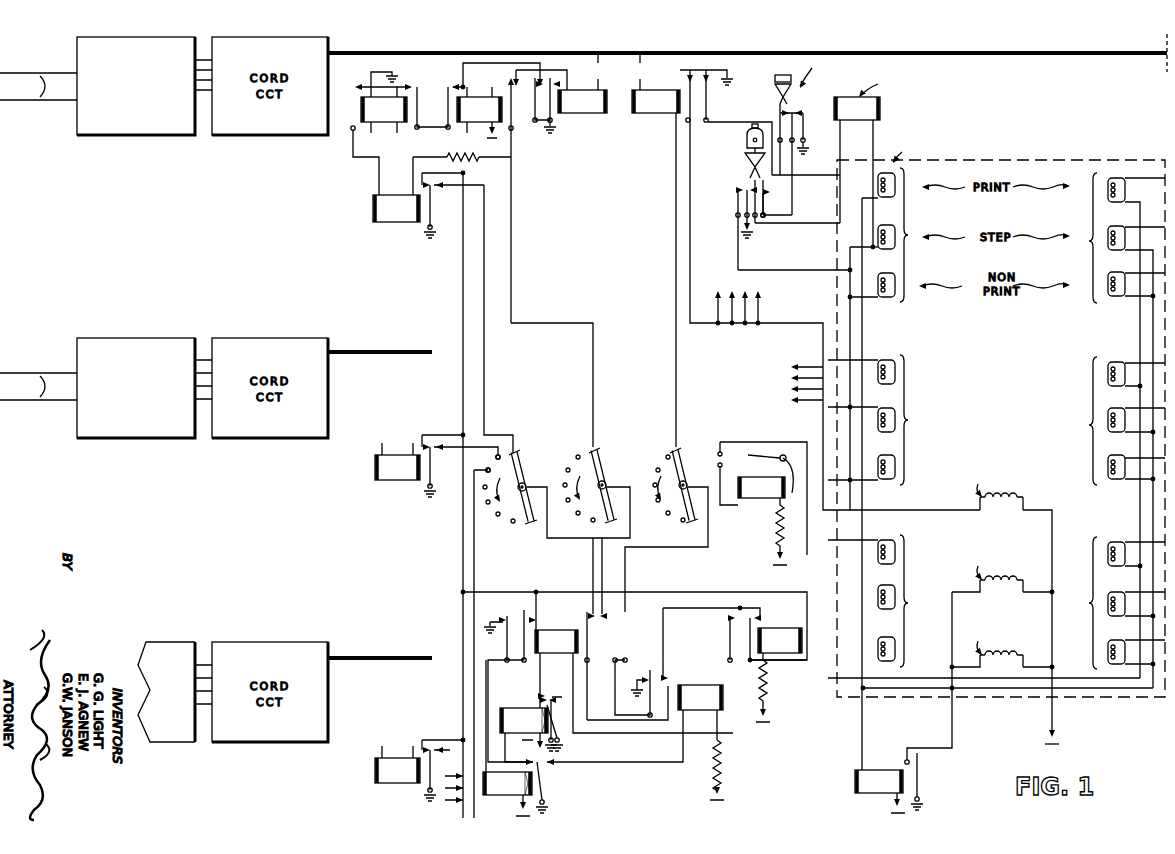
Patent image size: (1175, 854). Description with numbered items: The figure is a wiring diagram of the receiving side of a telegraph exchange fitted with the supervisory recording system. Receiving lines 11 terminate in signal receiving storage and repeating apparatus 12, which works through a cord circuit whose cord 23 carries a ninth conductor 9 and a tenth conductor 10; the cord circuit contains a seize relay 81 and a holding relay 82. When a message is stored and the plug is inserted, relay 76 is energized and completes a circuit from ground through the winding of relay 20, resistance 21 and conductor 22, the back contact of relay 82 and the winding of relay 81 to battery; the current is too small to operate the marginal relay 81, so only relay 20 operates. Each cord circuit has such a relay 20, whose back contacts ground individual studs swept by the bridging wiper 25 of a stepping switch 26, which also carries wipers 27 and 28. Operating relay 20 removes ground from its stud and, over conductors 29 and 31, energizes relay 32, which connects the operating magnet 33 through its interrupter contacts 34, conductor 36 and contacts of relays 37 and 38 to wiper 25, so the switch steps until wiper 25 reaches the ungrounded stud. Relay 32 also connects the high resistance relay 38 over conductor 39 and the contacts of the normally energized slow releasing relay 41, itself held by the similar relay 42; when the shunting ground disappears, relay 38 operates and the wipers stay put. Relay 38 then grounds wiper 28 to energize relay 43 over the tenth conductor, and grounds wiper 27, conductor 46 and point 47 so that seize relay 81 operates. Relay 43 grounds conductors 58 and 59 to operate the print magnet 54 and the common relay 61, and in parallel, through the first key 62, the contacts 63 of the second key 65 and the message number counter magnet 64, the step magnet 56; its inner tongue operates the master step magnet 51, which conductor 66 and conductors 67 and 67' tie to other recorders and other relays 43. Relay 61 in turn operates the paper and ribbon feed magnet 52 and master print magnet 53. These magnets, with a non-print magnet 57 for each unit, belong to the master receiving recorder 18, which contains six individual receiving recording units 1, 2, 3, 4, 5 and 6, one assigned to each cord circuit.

The first relay coil group 1 is at (909, 235).
The second relay coil group 2 is at (874, 420).
The third relay coil group 3 is at (874, 601).
The fourth relay coil group 4 is at (1119, 430).
The fifth relay coil group 5 is at (1120, 421).
The sixth relay coil group 6 is at (1120, 603).
The conductor 9 is at (598, 71).
The conductor 10 is at (640, 71).
The receiving lines 11 is at (38, 236).
The signal receiving storage and repeating apparatus 12 is at (148, 136).
The master receiving recorder 18 is at (1103, 697).
The relay 20 is at (404, 222).
The resistance 21 is at (478, 161).
The conductor 22 is at (511, 142).
The cord 23 is at (1015, 53).
The bridging wiper 25 is at (520, 470).
The stepping switch 26 is at (641, 447).
The wiper 27 is at (604, 470).
The wiper 28 is at (685, 470).
The conductor 29 is at (463, 288).
The conductor 31 is at (668, 592).
The relay 32 is at (770, 636).
The operating magnet 33 is at (761, 499).
The interrupter contacts 34 is at (740, 453).
The conductor 36 is at (663, 637).
The relay 37 is at (712, 686).
The relay 38 is at (560, 626).
The conductor 39 is at (726, 712).
The relay 41 is at (526, 706).
The relay 42 is at (509, 796).
The relay 43 is at (656, 114).
The conductor 46 is at (544, 323).
The point 47 is at (514, 160).
The master step magnet 51 is at (1005, 511).
The master paper and ribbon feed magnet 52 is at (1005, 593).
The master print magnet 53 is at (1005, 668).
The print magnet 54 is at (896, 183).
The step magnet 56 is at (896, 229).
The non-print magnet 57 is at (888, 297).
The conductor 58 is at (734, 124).
The conductor 59 is at (812, 176).
The relay 61 is at (881, 793).
The first manually operable key 62 is at (775, 96).
The contacts 63 is at (776, 203).
The message number counter magnet 64 is at (880, 110).
The second manually operable key 65 is at (745, 179).
The conductor 66 is at (818, 323).
The conductors 67 is at (807, 393).
The conductors 67' is at (753, 308).
The relay 76 is at (392, 124).
The relay 81 is at (583, 114).
The relay 82 is at (482, 124).